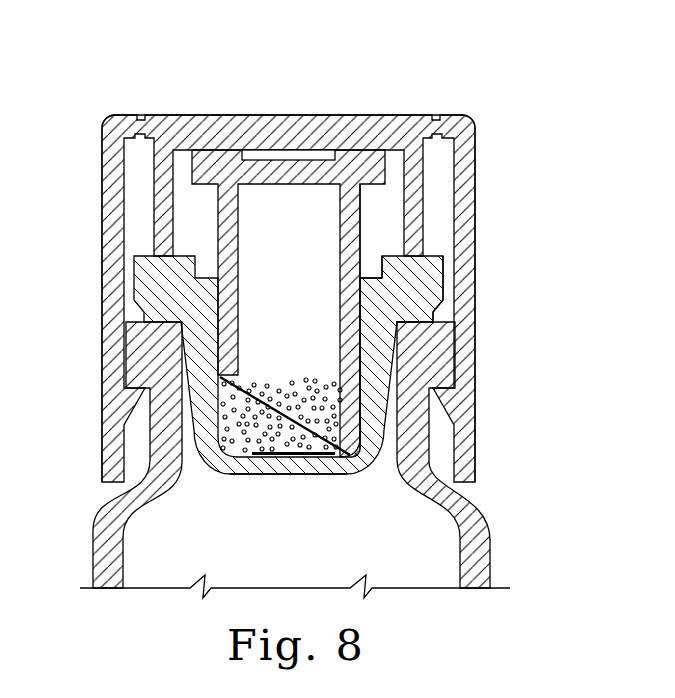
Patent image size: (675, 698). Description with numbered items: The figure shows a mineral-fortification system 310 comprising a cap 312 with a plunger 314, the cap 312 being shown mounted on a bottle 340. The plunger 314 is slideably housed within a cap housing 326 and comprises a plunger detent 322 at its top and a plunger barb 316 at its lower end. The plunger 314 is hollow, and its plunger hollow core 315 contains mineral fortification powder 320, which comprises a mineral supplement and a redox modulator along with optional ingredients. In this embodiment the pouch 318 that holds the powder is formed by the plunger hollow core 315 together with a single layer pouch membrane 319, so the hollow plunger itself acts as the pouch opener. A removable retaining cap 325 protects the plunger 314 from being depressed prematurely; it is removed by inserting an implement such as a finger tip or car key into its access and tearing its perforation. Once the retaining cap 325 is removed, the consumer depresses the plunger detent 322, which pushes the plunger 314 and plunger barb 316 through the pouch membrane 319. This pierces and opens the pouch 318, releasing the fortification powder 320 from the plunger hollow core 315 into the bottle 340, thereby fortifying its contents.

The mineral-fortification system 310 is at (528, 84).
The cap 312 is at (475, 190).
The plunger 314 is at (360, 228).
The plunger hollow core 315 is at (268, 328).
The plunger barb 316 is at (483, 548).
The pouch 318 is at (288, 415).
The pouch membrane 319 is at (288, 477).
The mineral fortification powder 320 is at (315, 408).
The plunger detent 322 is at (358, 148).
The retaining cap 325 is at (287, 117).
The cap housing 326 is at (405, 292).
The bottle 340 is at (352, 477).